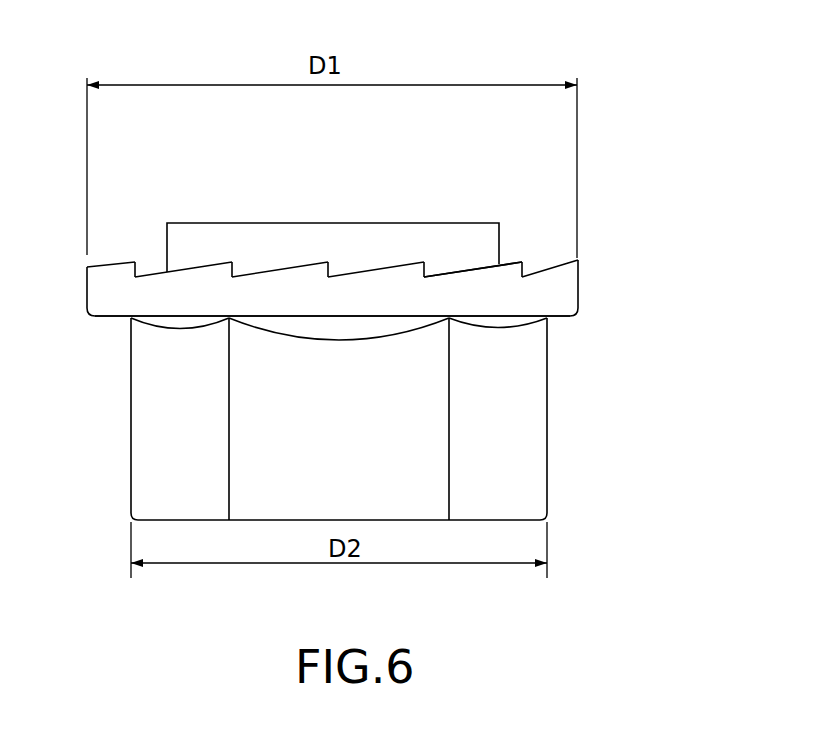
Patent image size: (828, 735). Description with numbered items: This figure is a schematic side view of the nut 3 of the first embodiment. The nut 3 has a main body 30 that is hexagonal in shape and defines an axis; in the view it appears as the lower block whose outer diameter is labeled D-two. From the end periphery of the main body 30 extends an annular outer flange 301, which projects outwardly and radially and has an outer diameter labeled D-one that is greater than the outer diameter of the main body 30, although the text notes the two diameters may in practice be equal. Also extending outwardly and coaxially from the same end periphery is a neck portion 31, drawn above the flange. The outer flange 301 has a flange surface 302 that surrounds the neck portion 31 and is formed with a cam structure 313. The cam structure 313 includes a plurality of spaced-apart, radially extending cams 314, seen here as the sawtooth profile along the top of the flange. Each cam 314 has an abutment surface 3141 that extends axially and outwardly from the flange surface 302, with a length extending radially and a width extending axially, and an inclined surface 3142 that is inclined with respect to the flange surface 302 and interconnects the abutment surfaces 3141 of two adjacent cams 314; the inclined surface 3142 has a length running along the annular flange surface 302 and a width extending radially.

The nut 3 is at (371, 305).
The main body 30 is at (513, 418).
The neck portion 31 is at (397, 203).
The annular outer flange 301 is at (558, 298).
The flange surface 302 is at (565, 218).
The cam structure 313 is at (463, 263).
The cam 314 is at (397, 183).
The abutment surface 3141 is at (232, 267).
The inclined surface 3142 is at (180, 268).